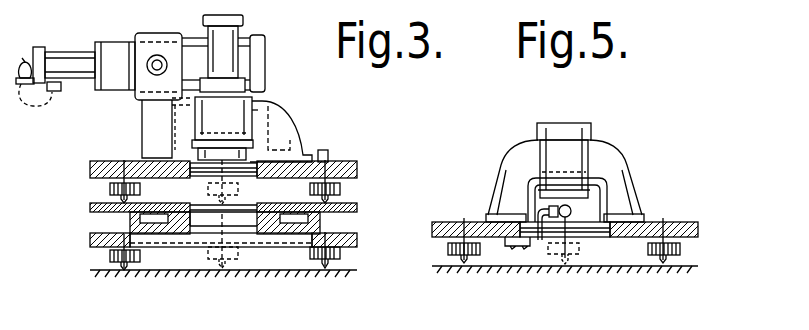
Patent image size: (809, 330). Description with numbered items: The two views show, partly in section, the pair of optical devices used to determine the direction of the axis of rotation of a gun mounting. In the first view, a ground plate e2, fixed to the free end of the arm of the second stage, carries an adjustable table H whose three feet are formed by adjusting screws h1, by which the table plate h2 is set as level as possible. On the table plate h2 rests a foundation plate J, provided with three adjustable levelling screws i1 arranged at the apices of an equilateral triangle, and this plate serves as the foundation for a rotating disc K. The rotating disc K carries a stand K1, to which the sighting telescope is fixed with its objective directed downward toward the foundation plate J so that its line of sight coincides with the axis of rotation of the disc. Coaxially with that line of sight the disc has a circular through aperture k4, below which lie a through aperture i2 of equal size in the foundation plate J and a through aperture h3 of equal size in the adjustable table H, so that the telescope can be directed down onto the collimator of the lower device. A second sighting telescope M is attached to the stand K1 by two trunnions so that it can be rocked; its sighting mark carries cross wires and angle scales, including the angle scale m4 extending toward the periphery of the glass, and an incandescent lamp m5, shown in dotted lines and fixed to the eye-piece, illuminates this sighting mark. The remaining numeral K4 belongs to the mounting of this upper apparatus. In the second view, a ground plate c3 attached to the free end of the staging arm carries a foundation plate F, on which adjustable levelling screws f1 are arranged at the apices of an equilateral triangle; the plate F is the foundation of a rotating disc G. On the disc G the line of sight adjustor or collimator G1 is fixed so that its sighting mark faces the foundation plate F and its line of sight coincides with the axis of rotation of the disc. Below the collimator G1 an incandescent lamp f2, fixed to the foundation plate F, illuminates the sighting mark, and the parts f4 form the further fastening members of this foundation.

In FIG. 3, the incandescent lamp m5 is at (27, 60).
In FIG. 3, the second sighting telescope M is at (73, 56).
In FIG. 3, the angle scale m4 is at (157, 55).
In FIG. 3, the rotating disc K is at (138, 158).
In FIG. 3, the adjusting spindle cylinder K4 is at (242, 20).
In FIG. 3, the stand K1 is at (264, 106).
In FIG. 3, the circular through aperture k4 is at (250, 159).
In FIG. 3, the foundation plate J is at (98, 164).
In FIG. 3, the adjustable levelling screws i1 is at (364, 185).
In FIG. 3, the through aperture i2 is at (210, 178).
In FIG. 3, the table plate h2 is at (90, 208).
In FIG. 3, the adjustable table H is at (90, 240).
In FIG. 3, the adjusting screws h1 is at (364, 250).
In FIG. 3, the through aperture h3 is at (198, 220).
In FIG. 3, the ground plate e2 is at (266, 271).
In FIG. 5, the line of sight adjustor (collimator) G1 is at (588, 130).
In FIG. 5, the rotating disc G is at (481, 221).
In FIG. 5, the incandescent lamp f2 is at (572, 210).
In FIG. 5, the foundation plate F is at (680, 222).
In FIG. 5, the adjusting nuts f4 is at (714, 248).
In FIG. 5, the levelling screws f1 is at (574, 258).
In FIG. 5, the ground plate c3 is at (650, 267).